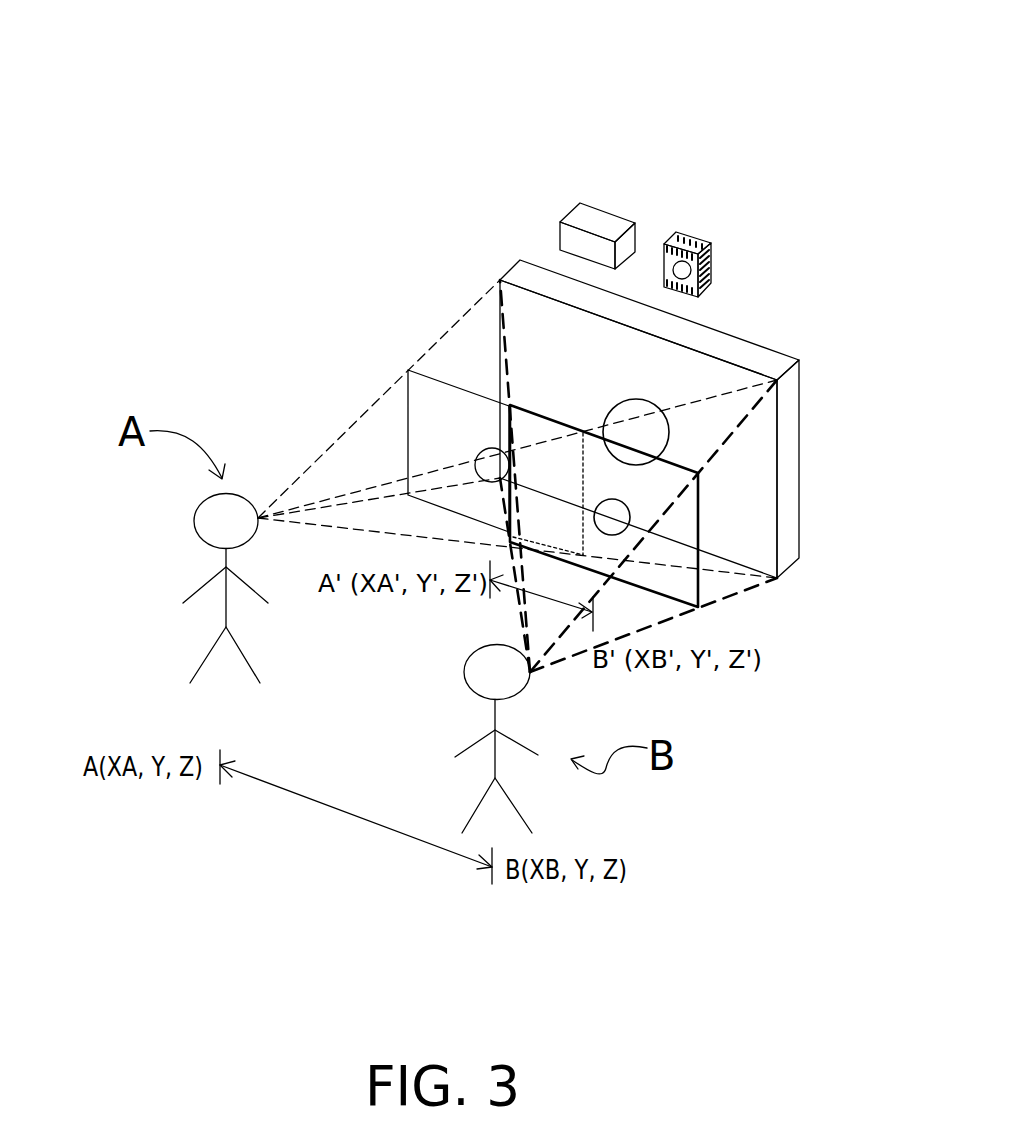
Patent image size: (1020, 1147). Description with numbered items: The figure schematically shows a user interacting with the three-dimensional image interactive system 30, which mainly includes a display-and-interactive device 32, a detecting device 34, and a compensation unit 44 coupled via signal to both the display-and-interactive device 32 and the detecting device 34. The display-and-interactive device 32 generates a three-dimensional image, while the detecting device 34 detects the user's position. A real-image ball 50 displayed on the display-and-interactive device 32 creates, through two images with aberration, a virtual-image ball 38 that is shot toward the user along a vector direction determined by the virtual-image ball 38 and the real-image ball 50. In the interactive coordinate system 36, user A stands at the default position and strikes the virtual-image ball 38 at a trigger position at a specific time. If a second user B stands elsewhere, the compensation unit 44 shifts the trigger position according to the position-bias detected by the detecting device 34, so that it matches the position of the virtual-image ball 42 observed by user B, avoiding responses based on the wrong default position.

The 3D image interactive system 30 is at (706, 101).
The display-and-interactive device 32 is at (794, 404).
The detecting device 34 is at (692, 234).
The interactive coordinate system 36 is at (406, 421).
The virtual-image ball 38 is at (490, 448).
The virtual-image ball 42 is at (618, 514).
The compensation unit 44 is at (607, 206).
The real-image ball 50 is at (641, 406).